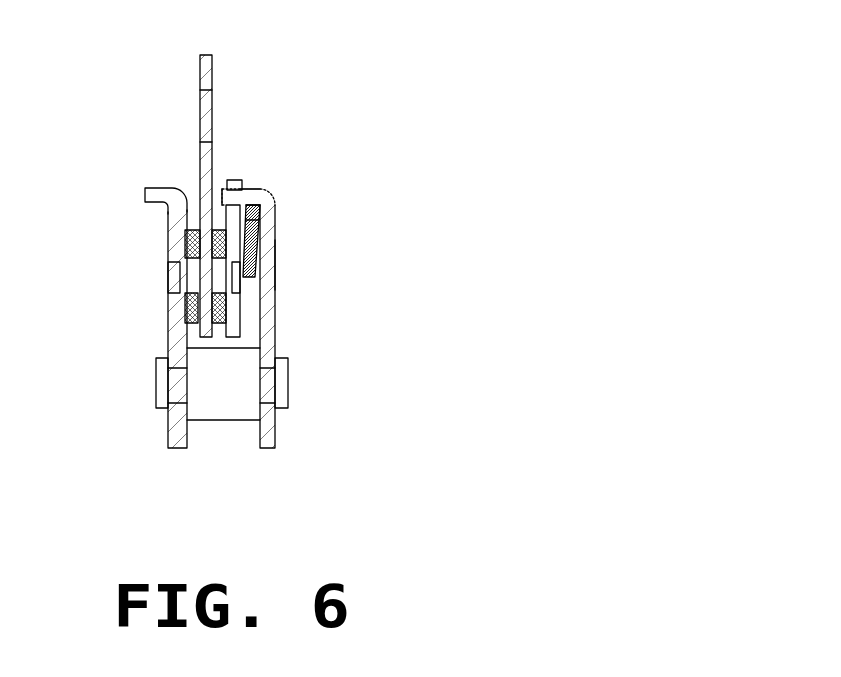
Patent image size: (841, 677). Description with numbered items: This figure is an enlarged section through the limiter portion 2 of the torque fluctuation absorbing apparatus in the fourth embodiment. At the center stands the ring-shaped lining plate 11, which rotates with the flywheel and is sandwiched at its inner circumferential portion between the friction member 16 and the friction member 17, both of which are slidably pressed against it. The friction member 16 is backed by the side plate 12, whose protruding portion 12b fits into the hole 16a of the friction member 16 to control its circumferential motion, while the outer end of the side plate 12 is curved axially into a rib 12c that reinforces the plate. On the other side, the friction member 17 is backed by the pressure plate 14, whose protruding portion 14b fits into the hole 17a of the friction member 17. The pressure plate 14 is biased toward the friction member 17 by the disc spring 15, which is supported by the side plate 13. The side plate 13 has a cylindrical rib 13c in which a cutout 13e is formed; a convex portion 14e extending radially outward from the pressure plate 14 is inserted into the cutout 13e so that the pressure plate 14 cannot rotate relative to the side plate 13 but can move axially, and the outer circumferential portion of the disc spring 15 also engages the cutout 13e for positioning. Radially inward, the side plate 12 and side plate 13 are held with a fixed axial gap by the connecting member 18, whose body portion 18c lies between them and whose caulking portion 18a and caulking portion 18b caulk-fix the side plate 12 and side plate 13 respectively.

The limiter portion 2 is at (300, 278).
The lining plate 11 is at (202, 165).
The side plate 12 is at (175, 430).
The protruding portion 12b is at (178, 277).
The rib 12c is at (160, 193).
The side plate 13 is at (270, 431).
The rib 13c is at (214, 189).
The cutout 13e is at (268, 190).
The pressure plate 14 is at (255, 212).
The protruding portion 14b is at (235, 285).
The convex portion 14e is at (262, 205).
The disc spring 15 is at (276, 266).
The friction member 16 is at (185, 246).
The hole 16a is at (185, 308).
The friction member 17 is at (238, 236).
The hole 17a is at (212, 318).
The connecting member 18 is at (157, 395).
The caulking portion 18a is at (156, 372).
The caulking portion 18b is at (290, 373).
The body portion 18c is at (270, 392).